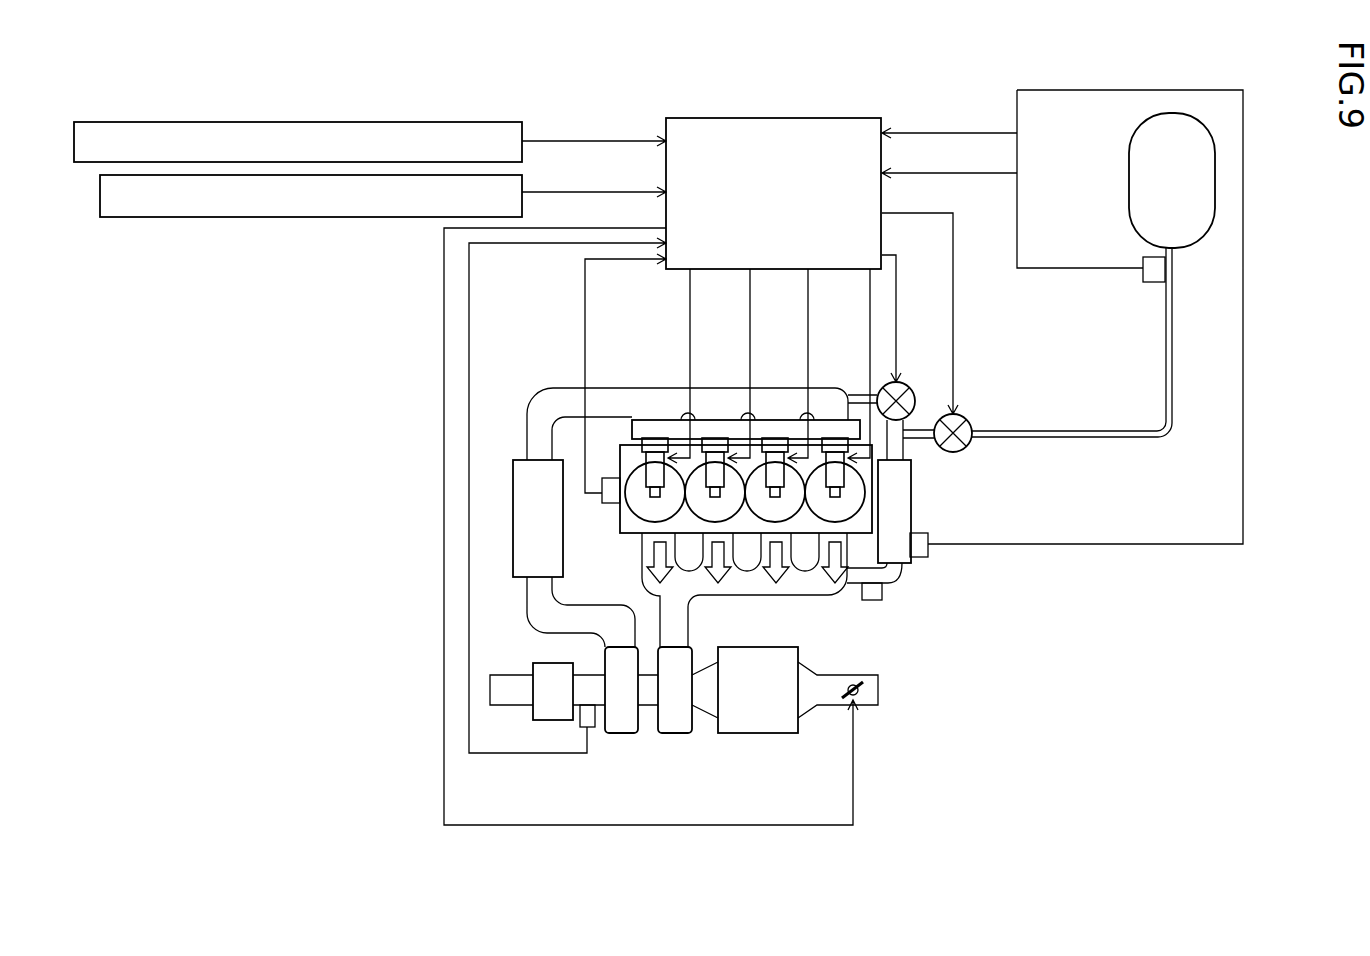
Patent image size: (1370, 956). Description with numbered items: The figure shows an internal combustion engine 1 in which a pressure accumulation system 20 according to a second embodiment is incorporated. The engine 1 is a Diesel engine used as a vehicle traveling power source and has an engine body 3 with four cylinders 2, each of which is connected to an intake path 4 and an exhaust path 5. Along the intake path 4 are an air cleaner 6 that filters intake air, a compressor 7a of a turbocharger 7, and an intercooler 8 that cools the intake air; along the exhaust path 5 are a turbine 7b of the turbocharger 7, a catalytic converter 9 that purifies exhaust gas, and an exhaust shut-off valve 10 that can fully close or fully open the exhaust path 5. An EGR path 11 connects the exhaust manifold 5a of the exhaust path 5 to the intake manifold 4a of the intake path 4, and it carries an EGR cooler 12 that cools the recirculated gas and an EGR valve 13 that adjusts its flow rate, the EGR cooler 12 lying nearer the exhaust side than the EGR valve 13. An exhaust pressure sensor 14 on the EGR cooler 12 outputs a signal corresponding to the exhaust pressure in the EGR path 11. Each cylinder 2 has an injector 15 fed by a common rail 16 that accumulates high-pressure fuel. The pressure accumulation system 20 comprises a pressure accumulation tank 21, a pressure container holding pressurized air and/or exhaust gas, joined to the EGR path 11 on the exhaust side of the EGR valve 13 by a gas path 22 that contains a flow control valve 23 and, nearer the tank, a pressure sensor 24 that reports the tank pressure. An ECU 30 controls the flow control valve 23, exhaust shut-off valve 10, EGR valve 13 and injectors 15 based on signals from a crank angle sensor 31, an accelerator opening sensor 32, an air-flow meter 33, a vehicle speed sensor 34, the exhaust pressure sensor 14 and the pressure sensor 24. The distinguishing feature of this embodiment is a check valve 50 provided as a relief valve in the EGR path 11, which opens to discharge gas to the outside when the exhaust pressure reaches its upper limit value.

The engine 1 is at (983, 673).
The cylinder 2 is at (628, 508).
The engine body 3 is at (620, 533).
The intake path 4 is at (548, 388).
The intake manifold 4a is at (782, 388).
The exhaust path 5 is at (830, 715).
The exhaust manifold 5a is at (788, 595).
The air cleaner 6 is at (548, 722).
The turbocharger 7 is at (648, 733).
The compressor 7a is at (622, 734).
The turbine 7b is at (675, 716).
The intercooler 8 is at (513, 522).
The catalytic converter 9 is at (755, 734).
The exhaust shut-off valve 10 is at (858, 683).
The EGR path 11 is at (900, 583).
The EGR cooler 12 is at (912, 510).
The EGR valve 13 is at (908, 385).
The exhaust pressure sensor 14 is at (930, 555).
The injector 15 is at (653, 498).
The common rail 16 is at (835, 420).
The pressure accumulation system 20 is at (1156, 455).
The pressure accumulation tank 21 is at (1128, 188).
The gas path 22 is at (1072, 430).
The flow control valve 23 is at (968, 420).
The pressure sensor 24 is at (1150, 285).
The ECU 30 is at (772, 118).
The crank angle sensor 31 is at (603, 478).
The accelerator opening sensor 32 is at (298, 122).
The air-flow meter 33 is at (596, 728).
The vehicle speed sensor 34 is at (296, 218).
The check valve 50 is at (882, 600).